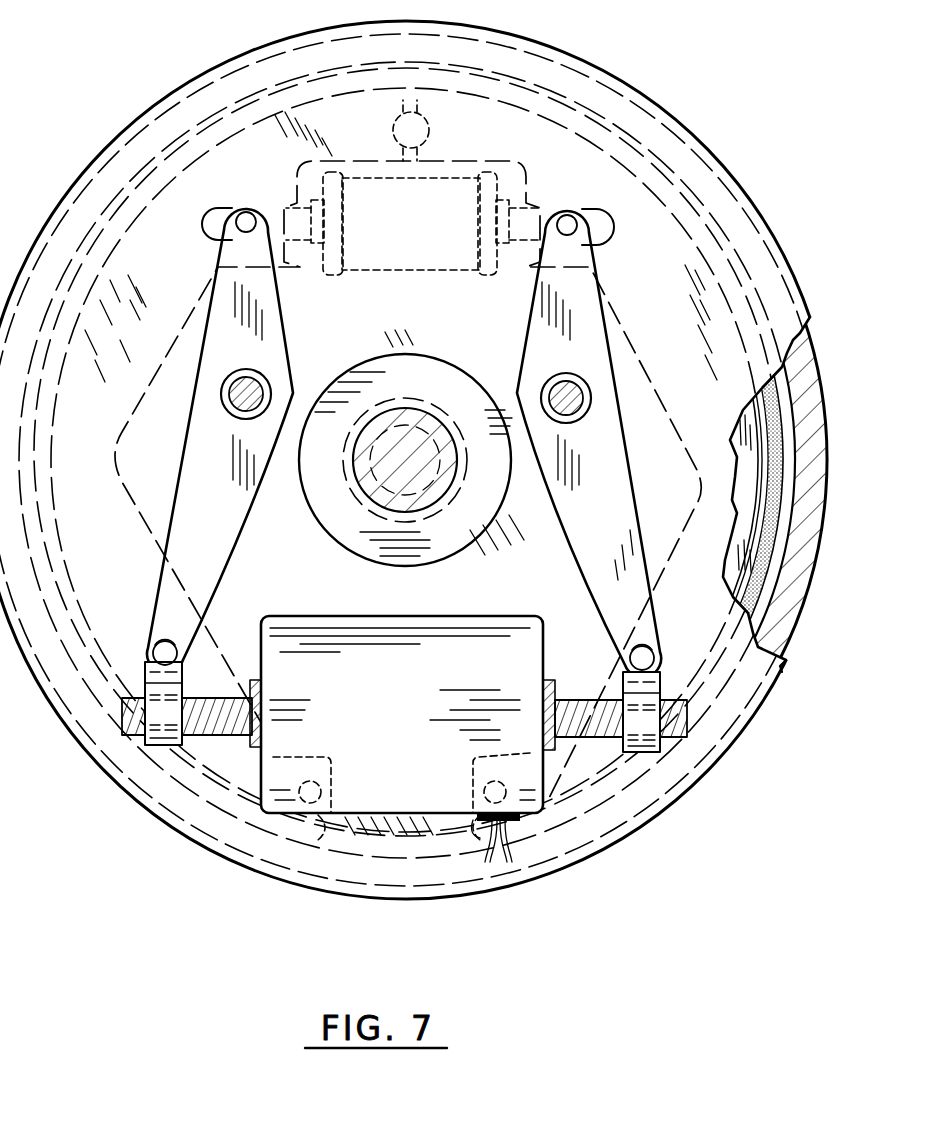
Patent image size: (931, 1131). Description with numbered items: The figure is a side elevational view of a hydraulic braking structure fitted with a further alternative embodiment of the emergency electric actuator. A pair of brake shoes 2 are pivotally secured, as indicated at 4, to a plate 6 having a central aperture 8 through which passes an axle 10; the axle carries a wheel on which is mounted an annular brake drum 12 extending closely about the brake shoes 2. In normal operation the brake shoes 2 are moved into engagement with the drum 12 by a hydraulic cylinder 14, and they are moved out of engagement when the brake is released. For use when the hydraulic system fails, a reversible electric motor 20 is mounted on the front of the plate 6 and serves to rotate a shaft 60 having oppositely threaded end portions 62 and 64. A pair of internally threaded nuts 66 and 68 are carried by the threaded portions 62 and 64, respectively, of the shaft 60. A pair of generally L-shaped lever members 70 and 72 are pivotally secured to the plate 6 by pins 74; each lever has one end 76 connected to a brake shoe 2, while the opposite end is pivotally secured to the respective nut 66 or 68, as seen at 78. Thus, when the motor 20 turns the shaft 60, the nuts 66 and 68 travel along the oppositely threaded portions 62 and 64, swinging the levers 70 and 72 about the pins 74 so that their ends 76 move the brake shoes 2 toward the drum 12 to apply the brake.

The brake shoes 2 is at (128, 410).
The pivotal securement of brake shoes 4 is at (333, 790).
The plate 6 is at (245, 53).
The central aperture 8 is at (437, 360).
The axle 10 is at (448, 498).
The annular brake drum 12 is at (785, 652).
The hydraulic cylinder 14 is at (405, 272).
The reversible electric motor 20 is at (445, 618).
The shaft 60 is at (222, 697).
The threaded end portion 62 is at (213, 738).
The threaded end portion 64 is at (598, 740).
The internally threaded nut 66 is at (143, 685).
The internally threaded nut 68 is at (662, 688).
The L-shaped lever member 70 is at (244, 530).
The L-shaped lever member 72 is at (565, 535).
The pins 74 is at (232, 385).
The lever end 76 is at (250, 215).
The pivotal securement of lever to nut 78 is at (158, 650).